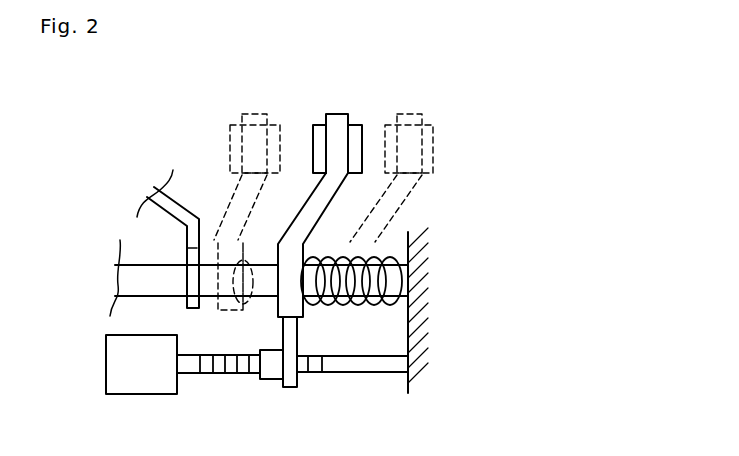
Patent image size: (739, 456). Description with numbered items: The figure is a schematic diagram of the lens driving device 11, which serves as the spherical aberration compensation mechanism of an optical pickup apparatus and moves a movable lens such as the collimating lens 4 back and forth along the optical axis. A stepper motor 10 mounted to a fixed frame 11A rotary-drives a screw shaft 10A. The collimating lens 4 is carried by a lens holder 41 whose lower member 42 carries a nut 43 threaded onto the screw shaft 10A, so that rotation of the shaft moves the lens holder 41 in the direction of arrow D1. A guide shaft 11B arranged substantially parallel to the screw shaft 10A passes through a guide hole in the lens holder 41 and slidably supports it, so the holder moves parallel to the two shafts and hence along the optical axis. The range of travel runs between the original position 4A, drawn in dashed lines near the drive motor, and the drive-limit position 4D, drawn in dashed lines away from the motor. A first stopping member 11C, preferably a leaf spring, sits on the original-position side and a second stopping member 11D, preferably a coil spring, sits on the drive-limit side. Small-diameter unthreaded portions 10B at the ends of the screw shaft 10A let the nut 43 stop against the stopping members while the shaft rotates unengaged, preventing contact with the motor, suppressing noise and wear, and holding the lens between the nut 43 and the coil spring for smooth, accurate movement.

The collimating lens 4 is at (313, 128).
The original position 4A is at (253, 112).
The drive-limit position 4D is at (405, 112).
The lens holder 41 is at (303, 205).
The lower member 42 is at (293, 387).
The nut 43 is at (272, 372).
The stepper motor 10 is at (131, 383).
The screw shaft 10A is at (225, 373).
The small-diameter unthreaded portions 10B is at (355, 373).
The lens driving device 11 is at (470, 185).
The fixed frame 11A is at (433, 307).
The guide shaft 11B is at (130, 265).
The first stopping member 11C is at (160, 190).
The second stopping member 11D is at (378, 260).
The direction of arrow D1 is at (398, 77).